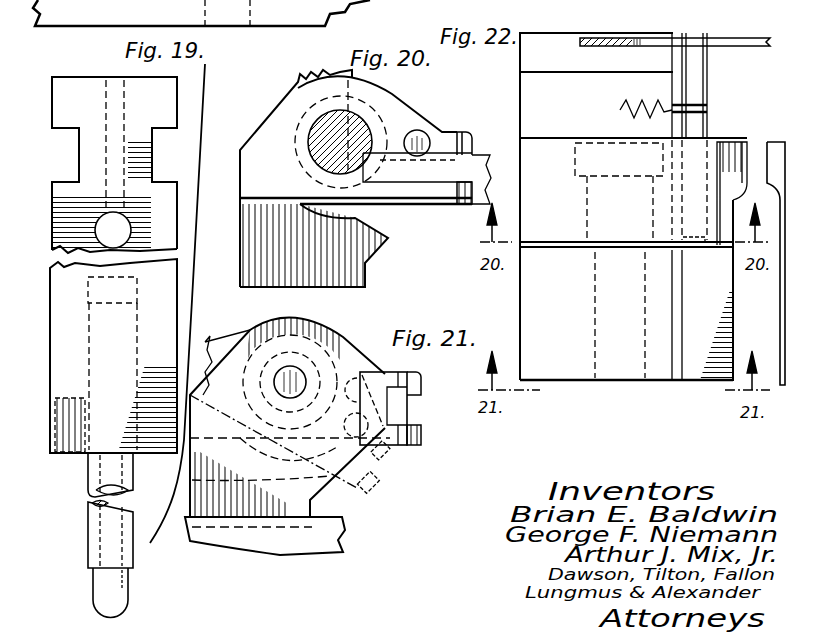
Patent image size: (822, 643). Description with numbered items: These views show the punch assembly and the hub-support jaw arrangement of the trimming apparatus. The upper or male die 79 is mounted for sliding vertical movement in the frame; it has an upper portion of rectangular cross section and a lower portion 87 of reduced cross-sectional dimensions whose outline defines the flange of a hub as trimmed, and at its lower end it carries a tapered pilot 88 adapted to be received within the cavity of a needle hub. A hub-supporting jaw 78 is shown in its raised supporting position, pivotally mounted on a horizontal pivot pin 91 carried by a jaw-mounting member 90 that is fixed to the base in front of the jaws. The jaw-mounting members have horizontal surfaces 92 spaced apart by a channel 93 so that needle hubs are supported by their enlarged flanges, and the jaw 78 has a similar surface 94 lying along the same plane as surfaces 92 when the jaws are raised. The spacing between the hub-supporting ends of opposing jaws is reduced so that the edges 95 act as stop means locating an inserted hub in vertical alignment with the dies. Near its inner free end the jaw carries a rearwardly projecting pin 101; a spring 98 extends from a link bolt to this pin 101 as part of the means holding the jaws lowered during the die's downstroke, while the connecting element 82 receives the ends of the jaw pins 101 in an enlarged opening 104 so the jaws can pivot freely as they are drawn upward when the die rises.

In FIG. 20, the hub-supporting jaw 78 is at (378, 103).
In FIG. 22, the hub-supporting jaw 78 is at (553, 152).
In FIG. 19, the upper or male die 79 is at (50, 205).
In FIG. 22, the means for swinging the jaws into raised position 82 is at (761, 36).
In FIG. 19, the lower portion of the upper die 87 is at (88, 470).
In FIG. 19, the tapered pilot 88 is at (92, 572).
In FIG. 21, the jaw-mounting member 90 is at (327, 492).
In FIG. 22, the jaw-mounting member 90 is at (577, 358).
In FIG. 20, the horizontal pivot pin 91 is at (368, 126).
In FIG. 21, the horizontal pivot pin 91 is at (332, 332).
In FIG. 22, the horizontal pivot pin 91 is at (582, 190).
In FIG. 21, the horizontal surface 92 is at (410, 373).
In FIG. 22, the horizontal surface 92 is at (706, 362).
In FIG. 22, the channel 93 is at (733, 322).
In FIG. 20, the hub-supporting surface of the jaw 94 is at (446, 130).
In FIG. 22, the hub-supporting surface of the jaw 94 is at (734, 147).
In FIG. 22, the stop edge 95 is at (759, 186).
In FIG. 22, the spring 98 is at (652, 104).
In FIG. 20, the jaw pin 101 is at (432, 150).
In FIG. 22, the jaw pin 101 is at (708, 82).
In FIG. 22, the opening 104 is at (630, 38).